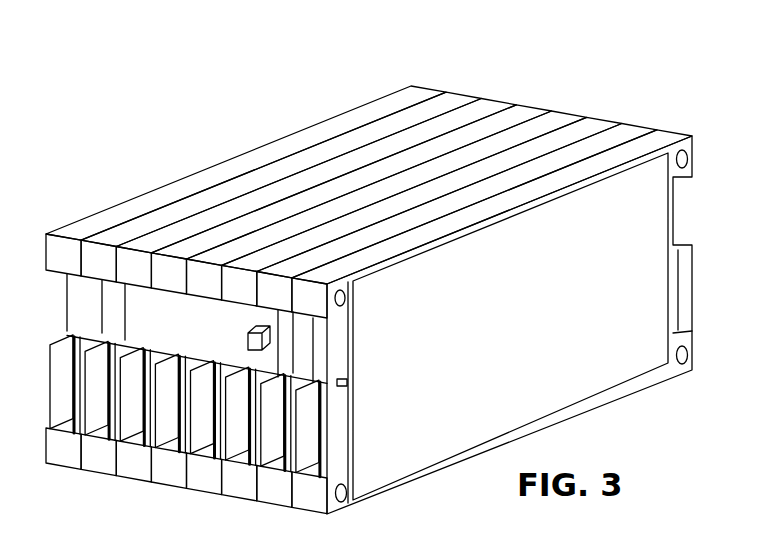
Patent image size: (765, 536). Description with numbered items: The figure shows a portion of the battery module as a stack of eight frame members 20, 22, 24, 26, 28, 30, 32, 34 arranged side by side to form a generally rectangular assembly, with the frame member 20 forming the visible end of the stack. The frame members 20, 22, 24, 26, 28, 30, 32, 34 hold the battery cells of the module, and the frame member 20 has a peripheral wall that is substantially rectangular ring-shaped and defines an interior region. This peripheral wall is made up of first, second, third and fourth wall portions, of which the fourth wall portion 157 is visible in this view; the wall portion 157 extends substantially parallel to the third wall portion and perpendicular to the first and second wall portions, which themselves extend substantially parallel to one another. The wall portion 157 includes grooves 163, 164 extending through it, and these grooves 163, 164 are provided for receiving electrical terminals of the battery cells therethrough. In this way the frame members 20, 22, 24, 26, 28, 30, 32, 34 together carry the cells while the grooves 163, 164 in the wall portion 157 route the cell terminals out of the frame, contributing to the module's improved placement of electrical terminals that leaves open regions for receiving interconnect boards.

The frame member 20 is at (662, 138).
The frame member 22 is at (626, 133).
The frame member 24 is at (591, 126).
The frame member 26 is at (555, 122).
The frame member 28 is at (519, 113).
The frame member 30 is at (485, 105).
The frame member 32 is at (450, 98).
The frame member 34 is at (415, 92).
The wall portion 157 is at (336, 330).
The groove 163 is at (340, 384).
The groove 164 is at (320, 381).